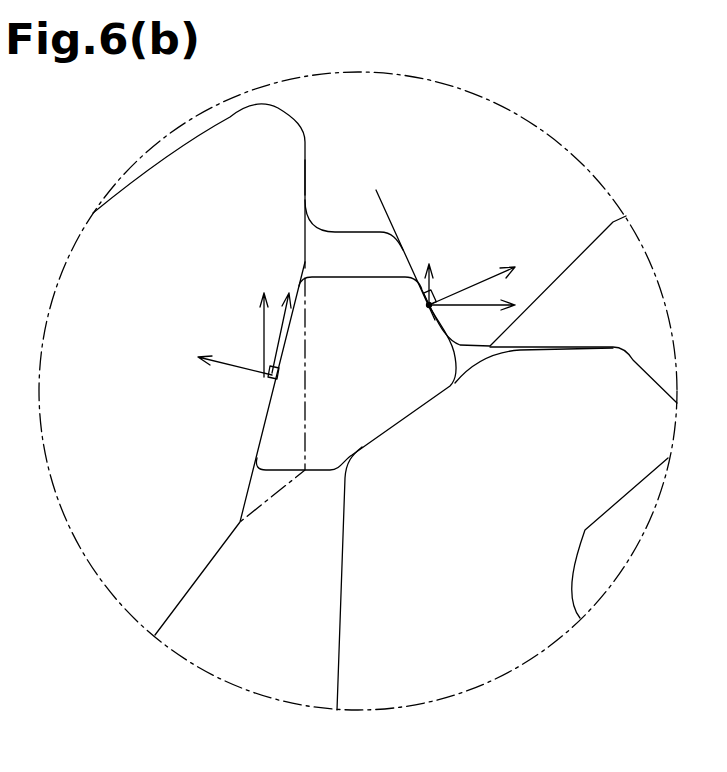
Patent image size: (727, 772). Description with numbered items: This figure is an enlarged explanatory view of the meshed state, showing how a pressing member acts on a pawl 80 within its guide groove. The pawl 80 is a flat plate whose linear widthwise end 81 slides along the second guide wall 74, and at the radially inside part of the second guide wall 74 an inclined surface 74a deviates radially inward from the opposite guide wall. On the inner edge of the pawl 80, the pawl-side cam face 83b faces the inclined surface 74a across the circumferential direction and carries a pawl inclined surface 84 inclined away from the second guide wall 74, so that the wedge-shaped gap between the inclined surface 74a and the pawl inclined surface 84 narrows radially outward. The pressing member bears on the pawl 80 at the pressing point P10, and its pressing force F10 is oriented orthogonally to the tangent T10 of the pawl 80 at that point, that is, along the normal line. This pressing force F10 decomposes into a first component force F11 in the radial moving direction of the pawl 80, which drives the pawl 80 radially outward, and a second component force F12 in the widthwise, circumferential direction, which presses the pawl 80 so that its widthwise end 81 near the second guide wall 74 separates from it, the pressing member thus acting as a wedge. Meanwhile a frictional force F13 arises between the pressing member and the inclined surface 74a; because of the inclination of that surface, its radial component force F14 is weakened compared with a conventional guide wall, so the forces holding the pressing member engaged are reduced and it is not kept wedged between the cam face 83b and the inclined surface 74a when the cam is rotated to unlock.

The second guide wall 74 is at (305, 153).
The inclined surface 74a is at (268, 407).
The pawl 80 is at (320, 170).
The widthwise end 81 is at (304, 190).
The pawl-side cam face 83b is at (408, 265).
The pawl inclined surface 84 is at (438, 323).
The pressing point P10 is at (428, 305).
The tangent T10 is at (385, 205).
The pressing force F10 is at (487, 273).
The first component force F11 is at (431, 290).
The second component force F12 is at (487, 308).
The frictional force F13 is at (287, 328).
The component force F14 is at (264, 323).